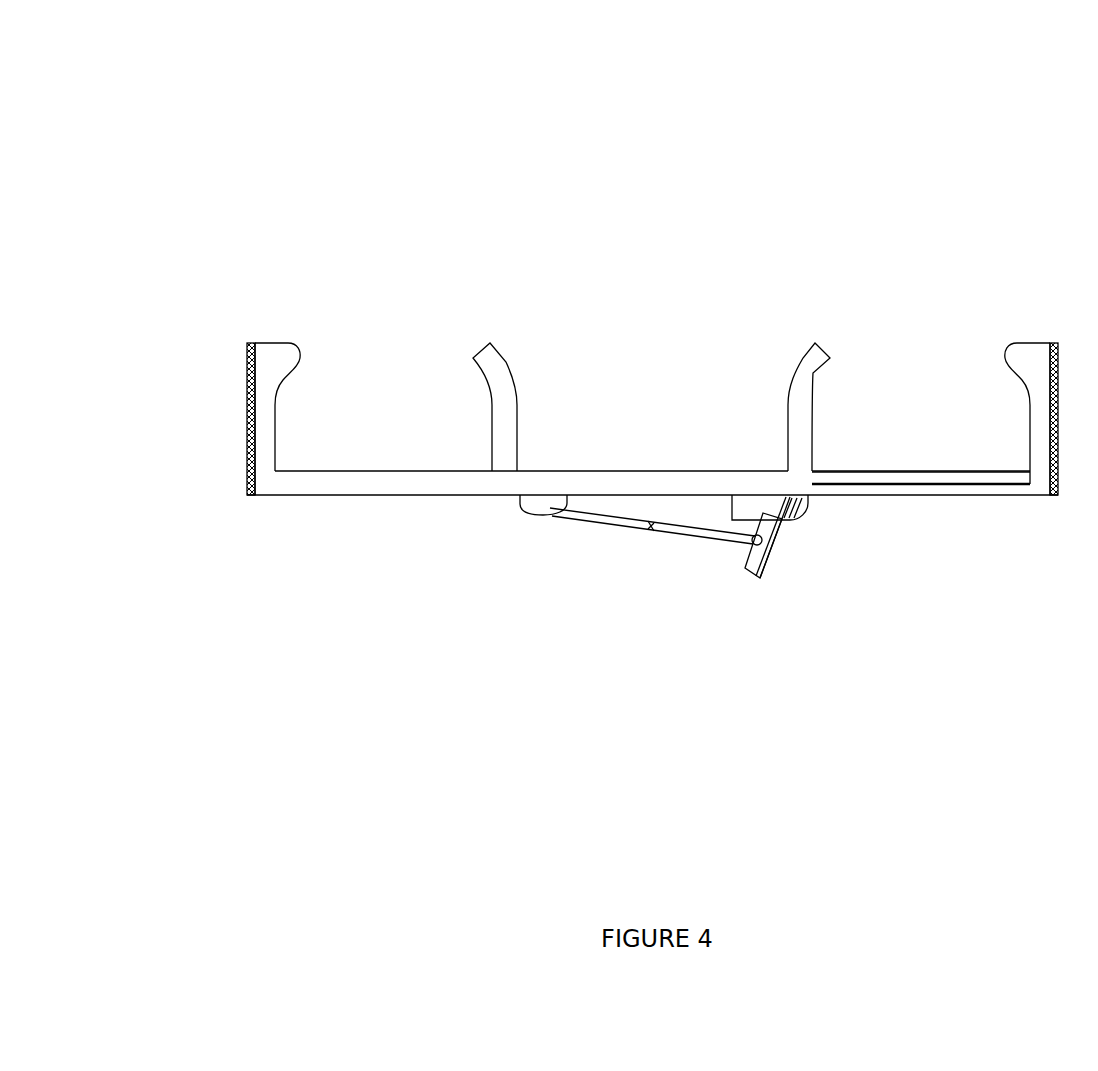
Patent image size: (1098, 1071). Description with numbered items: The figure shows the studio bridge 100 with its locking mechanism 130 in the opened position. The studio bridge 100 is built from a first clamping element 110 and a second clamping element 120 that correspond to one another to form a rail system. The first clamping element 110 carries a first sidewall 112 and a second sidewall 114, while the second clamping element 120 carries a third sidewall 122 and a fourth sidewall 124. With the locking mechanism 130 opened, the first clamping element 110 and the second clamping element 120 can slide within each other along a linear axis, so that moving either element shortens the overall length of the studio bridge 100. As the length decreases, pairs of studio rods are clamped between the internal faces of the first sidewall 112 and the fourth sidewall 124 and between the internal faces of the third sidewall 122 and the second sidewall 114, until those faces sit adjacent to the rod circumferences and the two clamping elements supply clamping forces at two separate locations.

The studio bridge 100 is at (214, 94).
The first clamping element 110 is at (379, 471).
The first sidewall 112 is at (813, 362).
The second sidewall 114 is at (268, 357).
The second clamping element 120 is at (937, 488).
The third sidewall 122 is at (487, 360).
The fourth sidewall 124 is at (1030, 362).
The locking mechanism 130 is at (549, 503).